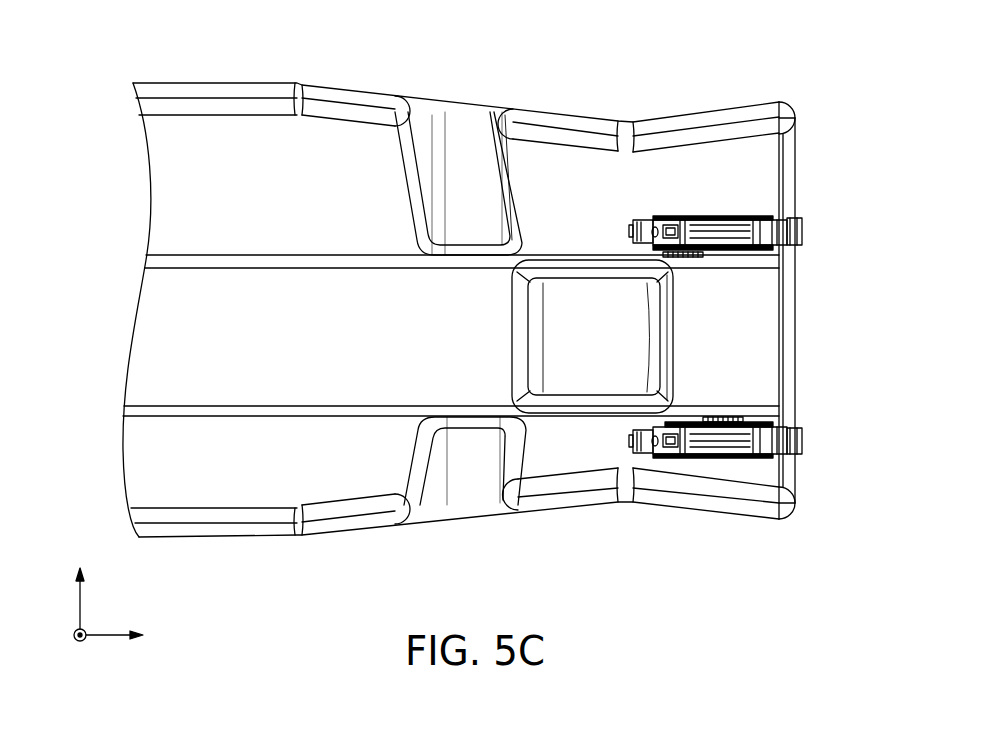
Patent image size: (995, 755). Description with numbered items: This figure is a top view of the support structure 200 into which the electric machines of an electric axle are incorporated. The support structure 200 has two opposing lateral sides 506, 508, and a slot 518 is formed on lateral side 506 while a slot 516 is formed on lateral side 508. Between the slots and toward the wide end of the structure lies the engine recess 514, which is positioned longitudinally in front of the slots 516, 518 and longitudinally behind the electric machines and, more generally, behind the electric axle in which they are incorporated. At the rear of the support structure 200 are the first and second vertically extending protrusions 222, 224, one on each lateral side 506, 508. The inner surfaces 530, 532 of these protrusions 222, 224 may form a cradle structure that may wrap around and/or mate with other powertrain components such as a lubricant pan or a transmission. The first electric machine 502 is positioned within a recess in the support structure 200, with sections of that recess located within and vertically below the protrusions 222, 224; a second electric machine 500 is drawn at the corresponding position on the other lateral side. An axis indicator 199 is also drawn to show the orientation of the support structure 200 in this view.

The coordinate system 199 is at (100, 620).
The support structure 200 is at (124, 74).
The first vertical protrusion 222 is at (776, 534).
The second vertical protrusion 224 is at (794, 82).
The lower latch assembly 500 is at (817, 418).
The first electric machine 502 is at (816, 221).
The lateral side 506 is at (399, 543).
The lateral side 508 is at (368, 78).
The engine recess 514 is at (544, 327).
The slot 516 is at (470, 106).
The slot 518 is at (469, 518).
The inner surface 530 is at (773, 498).
The inner surface 532 is at (773, 172).